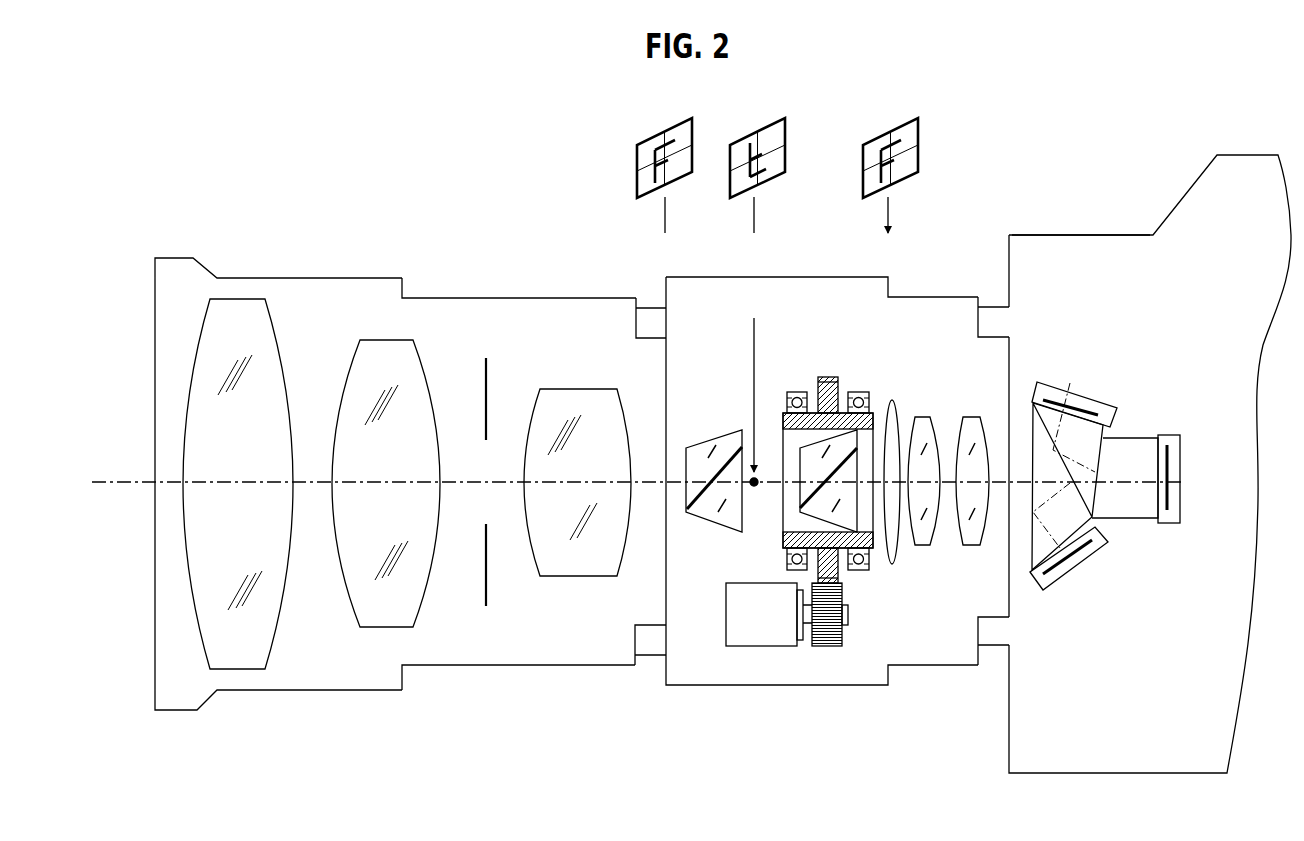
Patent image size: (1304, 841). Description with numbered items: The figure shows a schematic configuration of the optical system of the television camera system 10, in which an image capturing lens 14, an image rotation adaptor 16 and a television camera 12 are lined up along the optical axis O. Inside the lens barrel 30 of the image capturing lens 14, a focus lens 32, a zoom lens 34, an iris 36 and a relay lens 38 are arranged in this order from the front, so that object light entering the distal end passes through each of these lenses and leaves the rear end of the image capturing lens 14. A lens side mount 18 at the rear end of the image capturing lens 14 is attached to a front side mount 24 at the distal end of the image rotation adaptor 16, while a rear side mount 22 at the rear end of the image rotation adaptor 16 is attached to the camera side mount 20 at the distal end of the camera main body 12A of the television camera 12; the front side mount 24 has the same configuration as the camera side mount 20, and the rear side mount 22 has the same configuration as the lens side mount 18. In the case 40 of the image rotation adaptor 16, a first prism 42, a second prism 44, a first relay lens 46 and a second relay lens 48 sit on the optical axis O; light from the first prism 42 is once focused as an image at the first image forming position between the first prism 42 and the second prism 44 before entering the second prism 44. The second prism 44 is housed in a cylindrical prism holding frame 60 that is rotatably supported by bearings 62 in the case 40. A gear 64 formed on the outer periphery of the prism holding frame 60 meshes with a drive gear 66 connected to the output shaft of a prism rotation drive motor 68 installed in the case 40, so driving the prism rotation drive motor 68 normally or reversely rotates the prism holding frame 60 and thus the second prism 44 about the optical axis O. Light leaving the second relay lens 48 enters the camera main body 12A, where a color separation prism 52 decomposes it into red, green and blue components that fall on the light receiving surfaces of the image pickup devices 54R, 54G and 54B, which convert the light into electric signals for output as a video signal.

The optical axis O is at (115, 482).
The television camera system 10 is at (1018, 107).
The television camera 12 is at (1253, 172).
The camera main body 12A is at (1090, 245).
The image capturing lens 14 is at (390, 278).
The image rotation adaptor 16 is at (820, 290).
The lens side mount 18 is at (648, 345).
The camera side mount 20 is at (998, 314).
The rear side mount 22 is at (995, 605).
The front side mount 24 is at (650, 648).
The lens barrel 30 is at (515, 298).
The focus lens 32 is at (235, 660).
The zoom lens 34 is at (388, 615).
The iris 36 is at (486, 612).
The relay lens 38 is at (583, 568).
The case 40 is at (720, 277).
The first prism 42 is at (700, 455).
The second prism 44 is at (803, 482).
The first relay lens 46 is at (922, 420).
The second relay lens 48 is at (970, 420).
The color separation prism 52 is at (1135, 450).
The image pickup device for R 54R is at (1068, 382).
The image pickup device for G 54G is at (1165, 520).
The image pickup device for B 54B is at (1068, 590).
The prism holding frame 60 is at (783, 540).
The bearings 62 is at (797, 392).
The gear 64 is at (830, 377).
The drive gear 66 is at (823, 648).
The prism rotation drive motor 68 is at (760, 640).